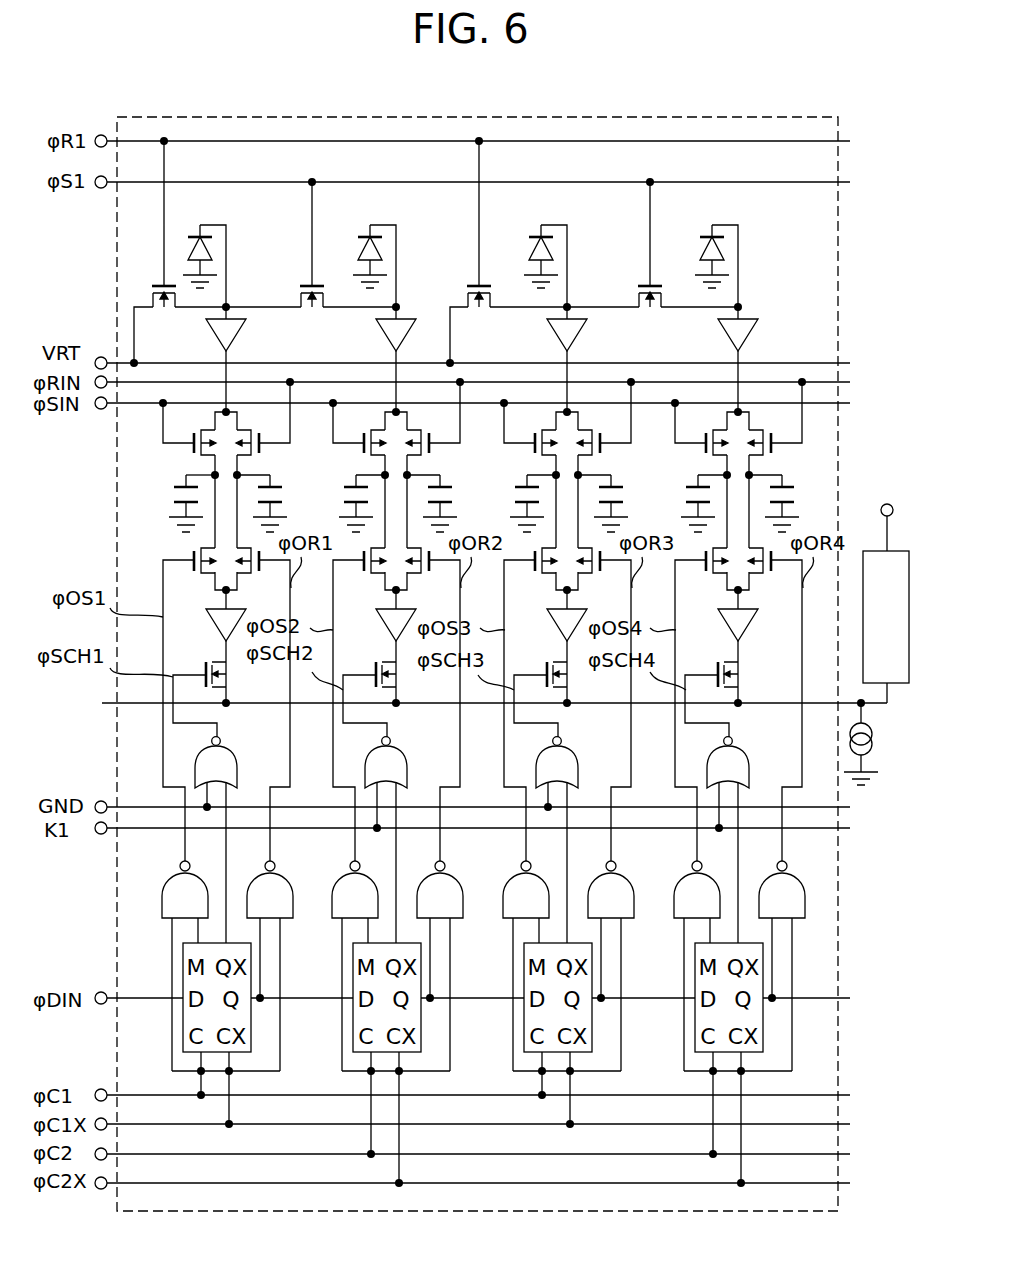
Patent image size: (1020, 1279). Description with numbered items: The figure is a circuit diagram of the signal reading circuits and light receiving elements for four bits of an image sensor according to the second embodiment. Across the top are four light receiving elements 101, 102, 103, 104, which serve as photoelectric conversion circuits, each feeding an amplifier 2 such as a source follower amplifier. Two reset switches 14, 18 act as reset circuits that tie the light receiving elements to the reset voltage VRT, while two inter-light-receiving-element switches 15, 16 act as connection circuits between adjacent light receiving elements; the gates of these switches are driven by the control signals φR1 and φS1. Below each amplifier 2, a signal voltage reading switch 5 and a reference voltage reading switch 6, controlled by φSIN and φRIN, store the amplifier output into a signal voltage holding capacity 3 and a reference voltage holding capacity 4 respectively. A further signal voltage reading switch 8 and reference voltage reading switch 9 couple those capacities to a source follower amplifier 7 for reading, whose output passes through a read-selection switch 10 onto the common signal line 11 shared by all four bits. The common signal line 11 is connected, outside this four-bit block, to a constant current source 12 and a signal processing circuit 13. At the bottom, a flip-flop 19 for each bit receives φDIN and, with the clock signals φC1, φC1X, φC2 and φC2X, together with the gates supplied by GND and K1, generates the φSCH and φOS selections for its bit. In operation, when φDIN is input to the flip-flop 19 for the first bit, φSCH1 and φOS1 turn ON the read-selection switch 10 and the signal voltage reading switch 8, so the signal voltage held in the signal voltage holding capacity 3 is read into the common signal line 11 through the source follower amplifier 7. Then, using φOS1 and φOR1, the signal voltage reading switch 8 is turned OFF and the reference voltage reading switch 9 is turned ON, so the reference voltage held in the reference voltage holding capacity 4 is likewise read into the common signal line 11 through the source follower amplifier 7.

The amplifier 2 is at (206, 333).
The signal voltage holding capacity 3 is at (172, 493).
The reference voltage holding capacity 4 is at (286, 493).
The signal voltage reading switch 5 is at (194, 436).
The reference voltage reading switch 6 is at (260, 436).
The source follower amplifier 7 is at (207, 622).
The signal voltage reading switch 8 is at (194, 556).
The reference voltage reading switch 9 is at (245, 574).
The read-selection switch 10 is at (236, 674).
The common signal line 11 is at (814, 700).
The constant current source 12 is at (872, 743).
The signal processing circuit 13 is at (862, 620).
The reset switch 14 is at (152, 300).
The inter-light-receiving-element switch 15 is at (302, 300).
The inter-light-receiving-element switch 16 is at (640, 300).
The reset switch 18 is at (469, 300).
The flip-flop 19 is at (182, 973).
The light receiving element 101 is at (188, 245).
The light receiving element 102 is at (360, 248).
The light receiving element 103 is at (530, 248).
The light receiving element 104 is at (700, 248).